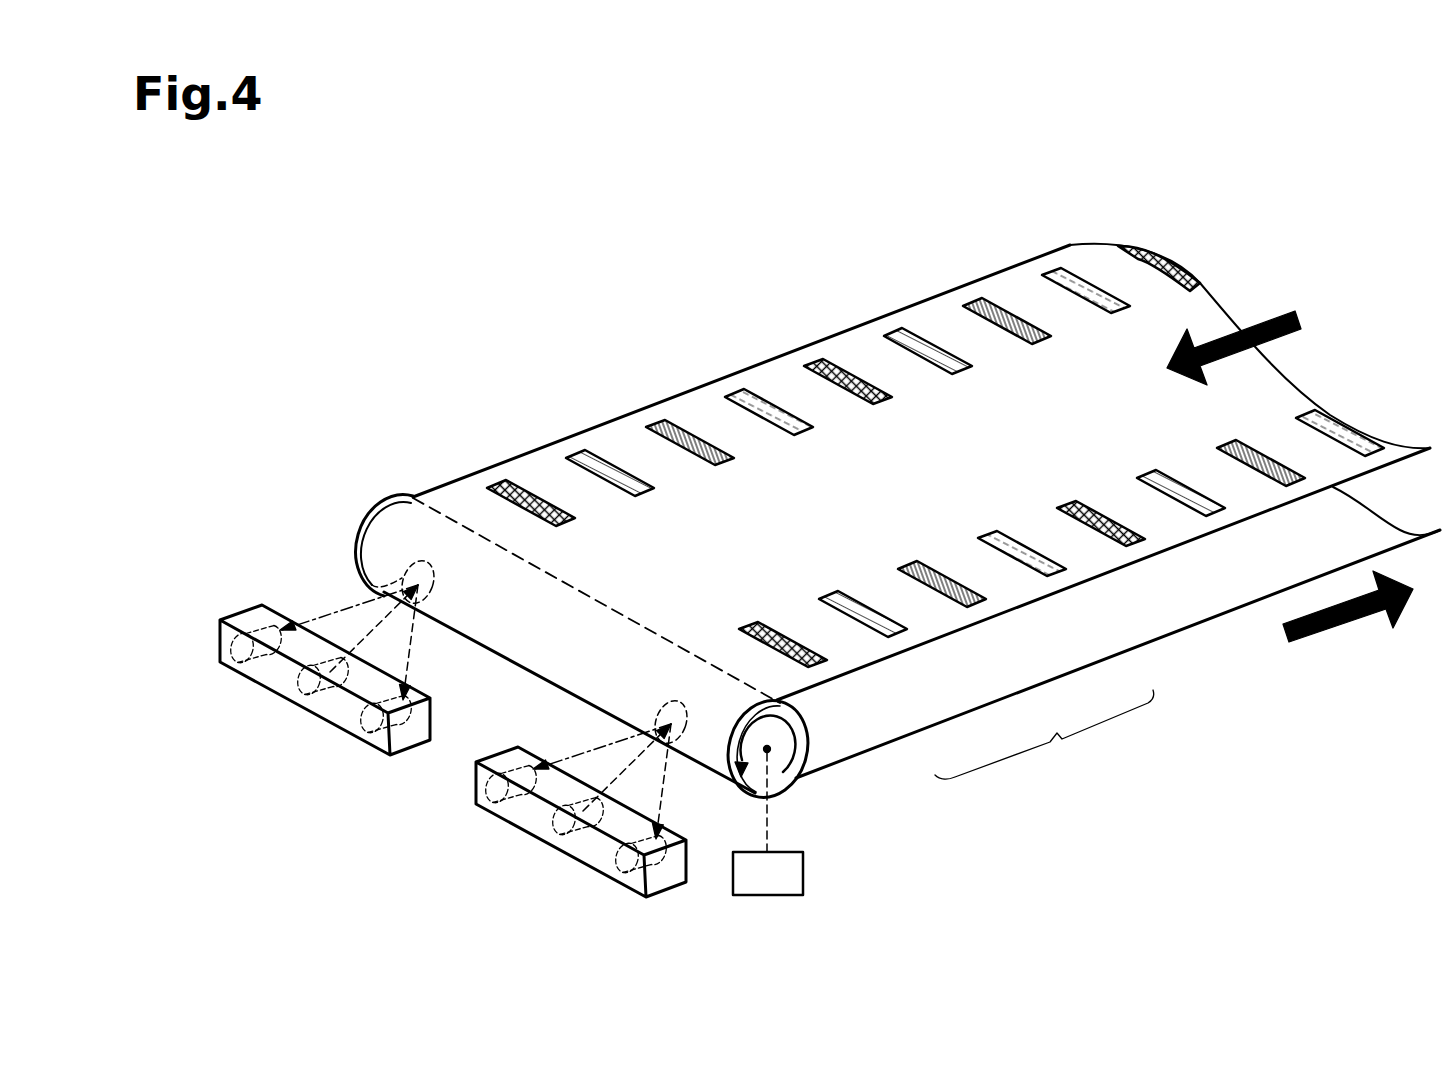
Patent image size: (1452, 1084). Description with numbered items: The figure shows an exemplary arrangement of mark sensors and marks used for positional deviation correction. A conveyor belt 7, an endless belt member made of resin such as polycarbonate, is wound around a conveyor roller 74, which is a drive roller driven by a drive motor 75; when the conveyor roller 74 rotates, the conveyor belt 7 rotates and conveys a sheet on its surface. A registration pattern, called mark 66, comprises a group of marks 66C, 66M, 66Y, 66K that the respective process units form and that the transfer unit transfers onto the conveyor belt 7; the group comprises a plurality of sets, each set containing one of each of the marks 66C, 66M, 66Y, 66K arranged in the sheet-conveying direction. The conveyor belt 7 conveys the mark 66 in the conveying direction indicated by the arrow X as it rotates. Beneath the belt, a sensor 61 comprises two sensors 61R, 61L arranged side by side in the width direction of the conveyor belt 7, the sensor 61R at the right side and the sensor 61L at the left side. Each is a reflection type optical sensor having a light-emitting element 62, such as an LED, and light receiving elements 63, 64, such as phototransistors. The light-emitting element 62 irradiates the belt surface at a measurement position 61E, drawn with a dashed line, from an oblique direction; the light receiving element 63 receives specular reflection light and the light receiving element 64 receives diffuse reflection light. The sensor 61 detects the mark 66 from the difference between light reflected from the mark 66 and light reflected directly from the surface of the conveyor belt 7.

The conveyor belt 7 is at (650, 405).
The mark 66 is at (1044, 734).
The mark 66K is at (510, 485).
The mark 66Y is at (905, 630).
The mark 66M is at (985, 598).
The mark 66C is at (1062, 567).
The conveyor roller 74 is at (800, 748).
The drive motor 75 is at (805, 870).
The sensor 61 is at (453, 751).
The sensor 61R is at (400, 748).
The sensor 61L is at (476, 780).
The measurement position 61E is at (395, 572).
The light-emitting element 62 is at (298, 697).
The light receiving element 63 is at (235, 662).
The light receiving element 64 is at (375, 733).
The arrow X is at (1250, 325).